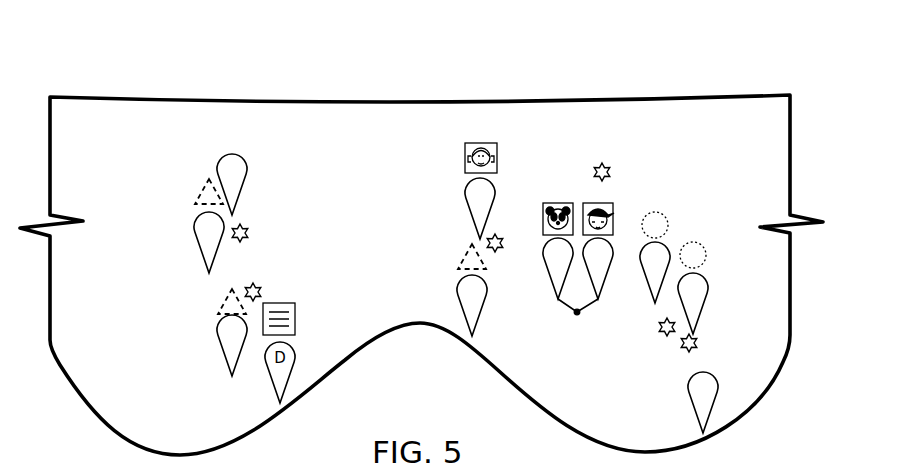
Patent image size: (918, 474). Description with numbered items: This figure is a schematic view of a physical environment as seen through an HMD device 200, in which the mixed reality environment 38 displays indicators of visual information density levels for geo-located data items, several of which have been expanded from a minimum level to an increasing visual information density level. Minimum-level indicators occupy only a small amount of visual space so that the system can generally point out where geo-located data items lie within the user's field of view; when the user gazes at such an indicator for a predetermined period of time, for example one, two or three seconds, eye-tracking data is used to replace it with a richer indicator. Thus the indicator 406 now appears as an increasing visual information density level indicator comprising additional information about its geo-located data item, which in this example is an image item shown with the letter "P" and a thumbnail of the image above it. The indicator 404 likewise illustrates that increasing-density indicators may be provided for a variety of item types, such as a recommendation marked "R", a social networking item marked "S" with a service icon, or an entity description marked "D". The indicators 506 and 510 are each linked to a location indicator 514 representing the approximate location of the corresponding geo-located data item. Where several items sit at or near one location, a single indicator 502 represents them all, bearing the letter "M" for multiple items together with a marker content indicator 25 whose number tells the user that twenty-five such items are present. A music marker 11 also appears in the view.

The HMD device 200 is at (195, 66).
The mixed reality environment 38 is at (357, 124).
The indicator 502 is at (217, 172).
The marker content indicator 25 is at (232, 176).
The indicator 404 is at (203, 252).
The indicator 406 is at (468, 209).
The indicator 506 is at (548, 278).
The indicator 510 is at (606, 278).
The location indicator 514 is at (577, 314).
The music marker 11 is at (703, 394).